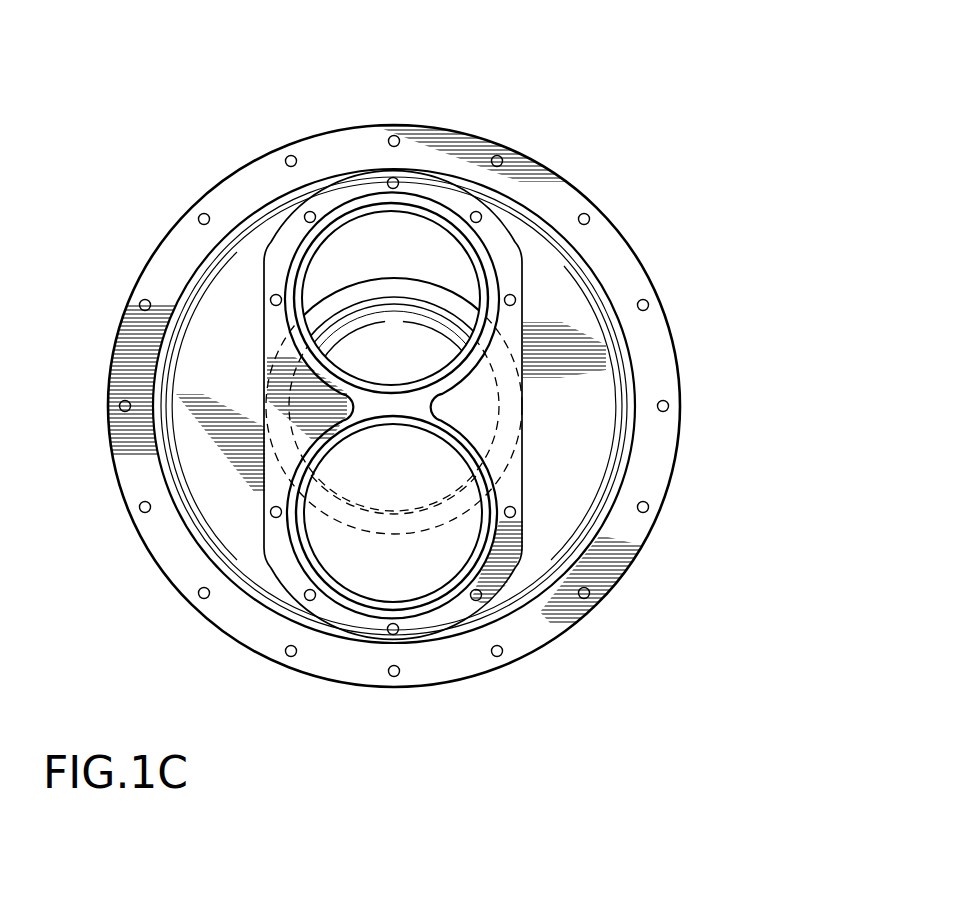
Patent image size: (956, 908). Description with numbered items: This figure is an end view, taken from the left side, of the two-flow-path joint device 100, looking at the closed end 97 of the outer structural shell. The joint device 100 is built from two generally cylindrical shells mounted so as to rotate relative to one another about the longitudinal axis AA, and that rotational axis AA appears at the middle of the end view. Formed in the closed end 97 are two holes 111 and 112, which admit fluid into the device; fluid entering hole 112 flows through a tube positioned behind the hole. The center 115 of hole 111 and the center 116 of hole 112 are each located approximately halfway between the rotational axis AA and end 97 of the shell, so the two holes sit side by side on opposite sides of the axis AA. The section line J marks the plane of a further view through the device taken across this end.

The closed end 97 is at (447, 147).
The joint device 100 is at (494, 123).
The hole 111 is at (343, 264).
The hole 112 is at (347, 548).
The center of hole 115 is at (392, 300).
The center of hole 116 is at (400, 512).
The longitudinal axis AA is at (393, 405).
The section line J- J is at (390, 114).